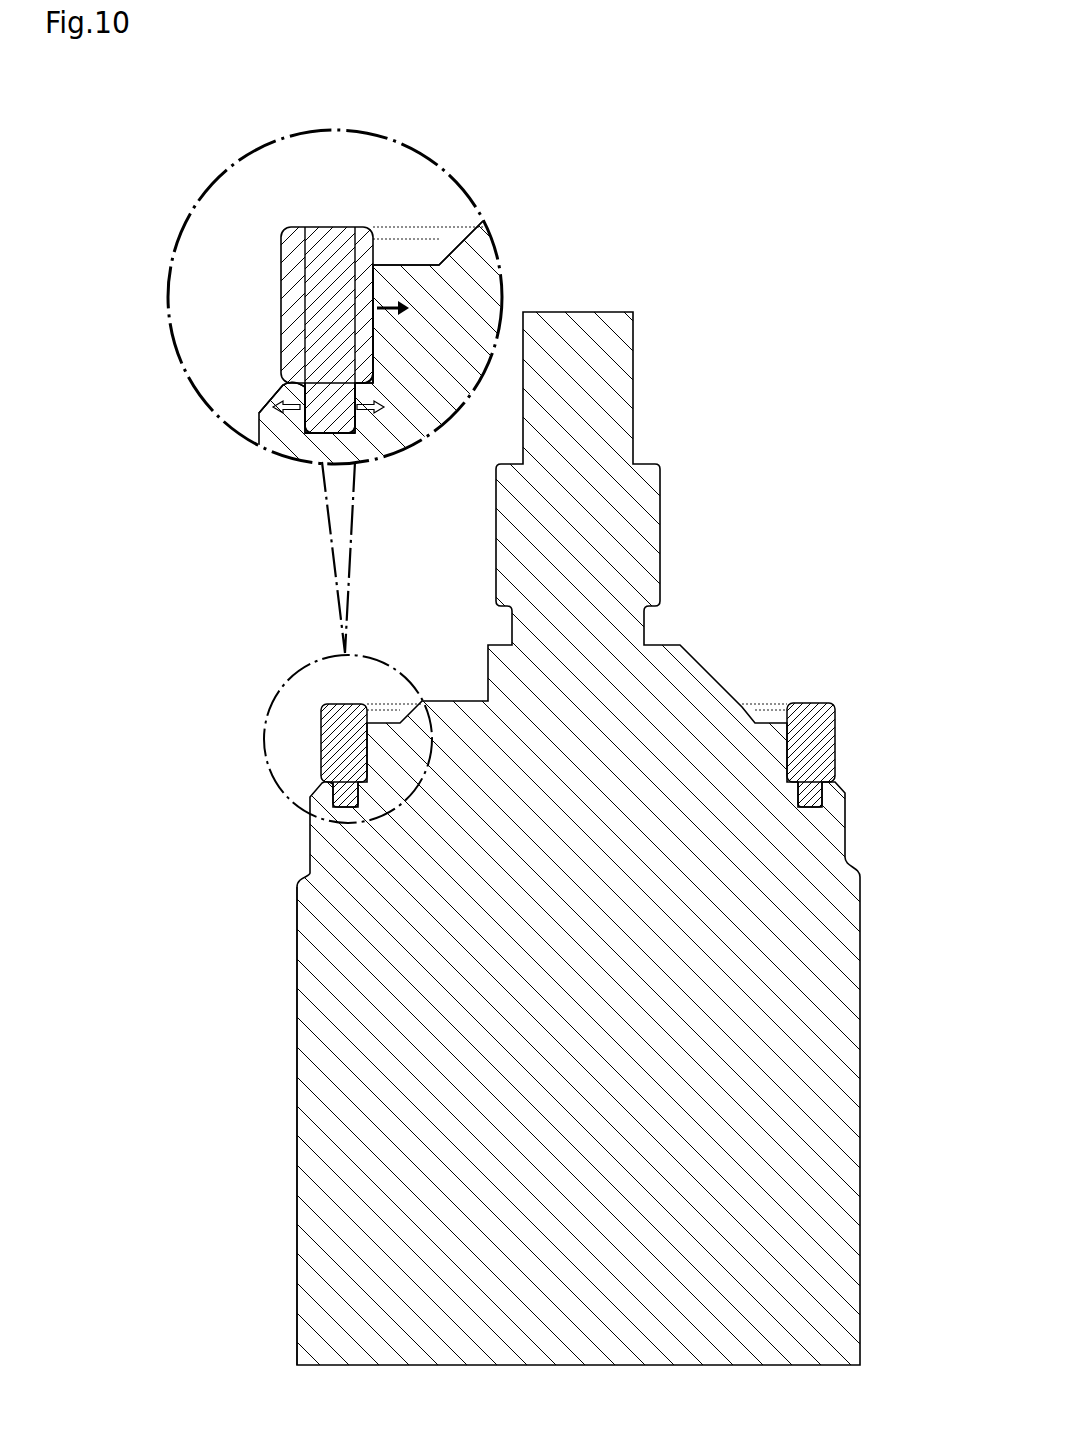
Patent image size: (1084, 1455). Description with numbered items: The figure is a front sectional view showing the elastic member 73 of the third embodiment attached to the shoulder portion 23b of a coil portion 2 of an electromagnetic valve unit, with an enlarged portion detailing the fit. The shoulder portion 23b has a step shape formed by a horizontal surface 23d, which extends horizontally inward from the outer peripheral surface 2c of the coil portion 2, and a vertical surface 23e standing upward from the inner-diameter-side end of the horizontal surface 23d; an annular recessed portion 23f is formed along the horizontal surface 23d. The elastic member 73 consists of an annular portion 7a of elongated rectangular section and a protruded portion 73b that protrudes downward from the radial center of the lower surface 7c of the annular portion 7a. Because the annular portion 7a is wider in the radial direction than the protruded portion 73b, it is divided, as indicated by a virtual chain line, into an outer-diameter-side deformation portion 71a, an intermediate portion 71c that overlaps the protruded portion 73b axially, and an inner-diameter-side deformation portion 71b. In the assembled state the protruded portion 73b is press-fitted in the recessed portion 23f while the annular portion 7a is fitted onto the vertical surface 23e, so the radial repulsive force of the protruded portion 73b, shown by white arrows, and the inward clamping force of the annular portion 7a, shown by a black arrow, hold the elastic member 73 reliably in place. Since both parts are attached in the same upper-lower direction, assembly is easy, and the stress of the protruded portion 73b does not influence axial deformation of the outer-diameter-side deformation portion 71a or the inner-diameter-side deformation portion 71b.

The coil portion 2 is at (876, 835).
The outer peripheral surface 2c is at (297, 1122).
The annular portion 7a is at (328, 233).
The lower surface 7c is at (372, 392).
The shoulder portion 23b is at (542, 727).
The horizontal surface 23d is at (293, 360).
The vertical surface 23e is at (320, 335).
The recessed portion 23f is at (352, 433).
The outer-diameter-side deformation portion 71a is at (292, 223).
The inner-diameter-side deformation portion 71b is at (357, 223).
The intermediate portion 71c is at (333, 223).
The elastic member 73 is at (817, 693).
The protruded portion 73b is at (312, 435).